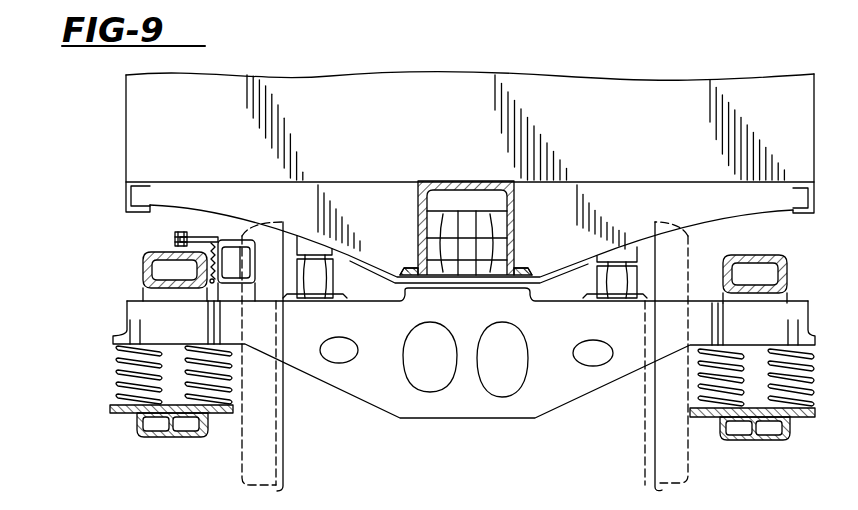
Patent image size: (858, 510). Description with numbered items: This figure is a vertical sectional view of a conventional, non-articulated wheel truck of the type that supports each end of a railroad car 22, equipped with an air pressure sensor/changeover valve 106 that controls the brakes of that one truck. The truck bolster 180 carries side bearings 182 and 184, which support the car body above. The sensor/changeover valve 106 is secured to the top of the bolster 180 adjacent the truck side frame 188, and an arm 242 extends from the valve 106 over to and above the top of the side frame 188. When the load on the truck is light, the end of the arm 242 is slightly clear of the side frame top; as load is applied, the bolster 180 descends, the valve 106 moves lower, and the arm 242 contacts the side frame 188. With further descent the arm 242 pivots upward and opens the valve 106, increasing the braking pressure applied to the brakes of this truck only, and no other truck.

The railroad car 22 is at (408, 163).
The sensor/changeover valve 106 is at (245, 296).
The truck bolster 180 is at (375, 398).
The side bearing 182 is at (333, 288).
The side bearing 184 is at (628, 277).
The truck side frame 188 is at (146, 265).
The arm 242 is at (212, 243).